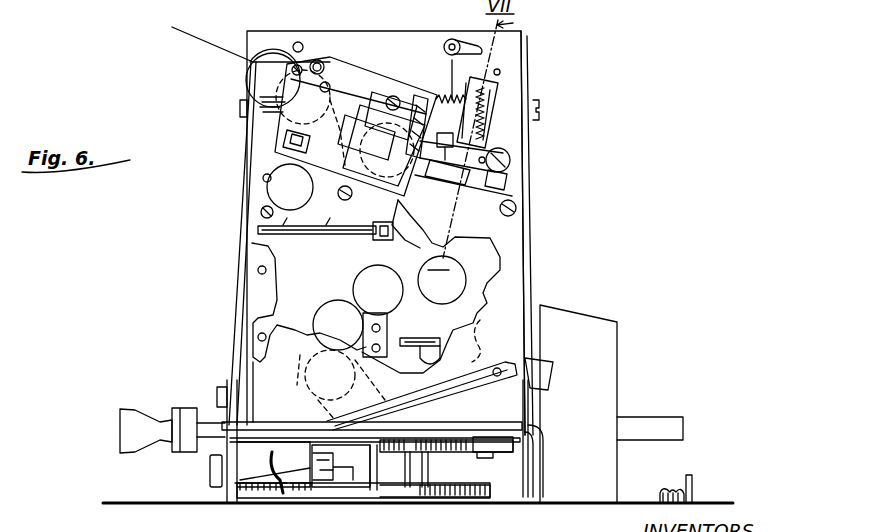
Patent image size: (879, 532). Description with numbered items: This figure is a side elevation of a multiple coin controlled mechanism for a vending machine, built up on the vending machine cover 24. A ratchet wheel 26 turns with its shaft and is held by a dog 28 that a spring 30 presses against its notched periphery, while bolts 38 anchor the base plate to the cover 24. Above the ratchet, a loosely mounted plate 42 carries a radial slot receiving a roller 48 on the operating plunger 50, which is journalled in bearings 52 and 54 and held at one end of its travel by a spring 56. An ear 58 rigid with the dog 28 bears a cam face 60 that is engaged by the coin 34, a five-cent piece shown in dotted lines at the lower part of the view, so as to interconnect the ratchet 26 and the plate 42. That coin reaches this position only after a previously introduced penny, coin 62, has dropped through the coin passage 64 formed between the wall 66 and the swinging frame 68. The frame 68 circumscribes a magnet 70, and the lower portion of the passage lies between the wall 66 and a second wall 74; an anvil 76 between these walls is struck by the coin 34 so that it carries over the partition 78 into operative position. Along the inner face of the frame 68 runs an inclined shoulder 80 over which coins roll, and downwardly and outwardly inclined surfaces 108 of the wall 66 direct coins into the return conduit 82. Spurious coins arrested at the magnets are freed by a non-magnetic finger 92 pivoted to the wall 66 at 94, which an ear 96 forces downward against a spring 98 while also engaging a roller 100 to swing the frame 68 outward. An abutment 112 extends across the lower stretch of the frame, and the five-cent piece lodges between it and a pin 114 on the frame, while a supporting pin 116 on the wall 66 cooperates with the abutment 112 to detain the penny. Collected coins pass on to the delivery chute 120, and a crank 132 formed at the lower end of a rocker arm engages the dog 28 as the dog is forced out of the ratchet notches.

The vending machine cover 24 is at (132, 503).
The ratchet wheel 26 is at (490, 492).
The dog 28 is at (237, 492).
The spring 30 is at (272, 466).
The coin 34 is at (248, 73).
The bolts 38 is at (670, 492).
The plate 42 is at (446, 463).
The roller 48 is at (480, 438).
The operating plunger 50 is at (657, 428).
The bearing 52 is at (538, 450).
The bearing 54 is at (222, 395).
The spring 56 is at (625, 503).
The ear 58 is at (315, 497).
The cam face 60 is at (341, 466).
The coin 62 is at (277, 189).
The coin passage 64 is at (415, 256).
The wall 66 is at (367, 38).
The swinging frame 68 is at (386, 78).
The magnet 70 is at (369, 163).
The wall 74 is at (510, 238).
The anvil 76 is at (478, 315).
The partition 78 is at (385, 333).
The inclined shoulder 80 is at (385, 175).
The conduit 82 is at (212, 468).
The finger 92 is at (463, 178).
The pivot 94 is at (492, 163).
The ear 96 is at (450, 100).
The spring 98 is at (487, 132).
The roller 100 is at (391, 116).
The inclined surfaces 108 is at (258, 230).
The abutment 112 is at (344, 221).
The pin 114 is at (265, 177).
The supporting pin 116 is at (303, 222).
The delivery chute 120 is at (608, 358).
The crank 132 is at (283, 497).